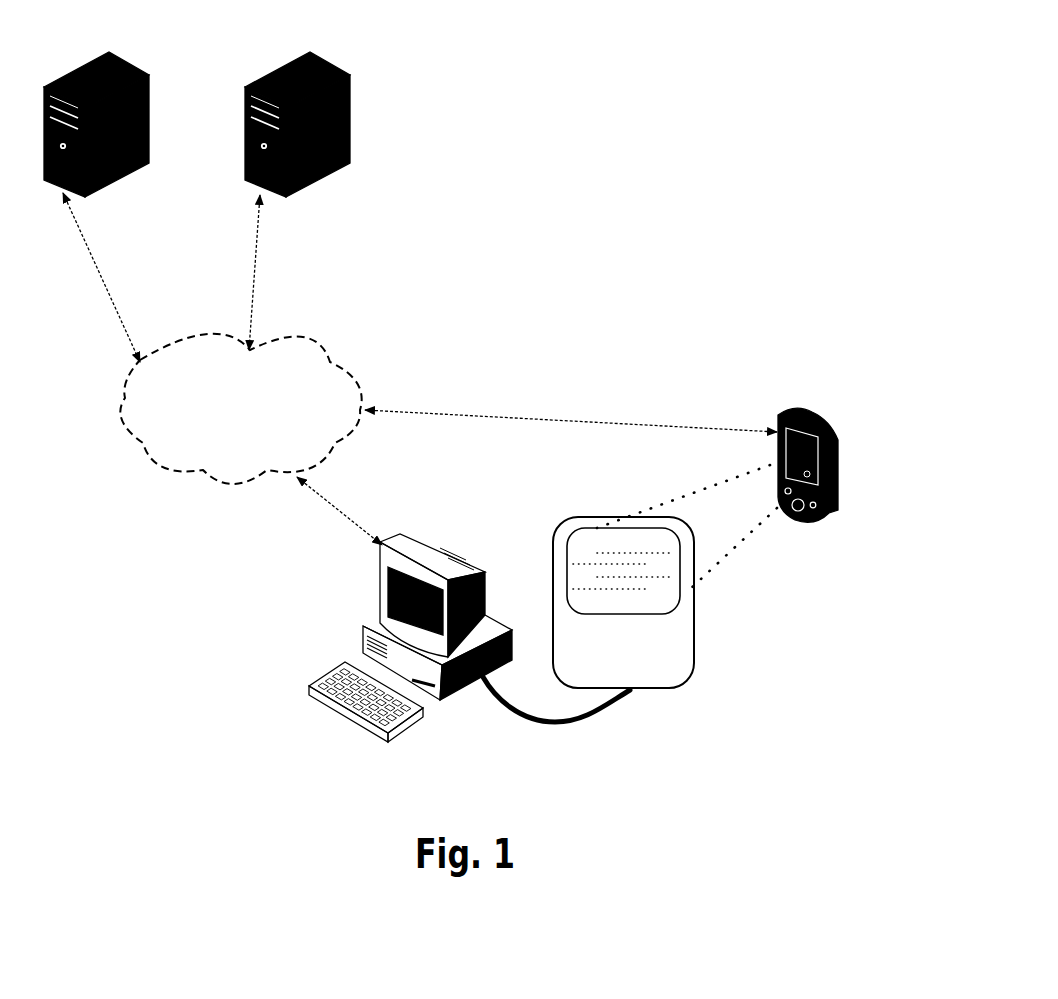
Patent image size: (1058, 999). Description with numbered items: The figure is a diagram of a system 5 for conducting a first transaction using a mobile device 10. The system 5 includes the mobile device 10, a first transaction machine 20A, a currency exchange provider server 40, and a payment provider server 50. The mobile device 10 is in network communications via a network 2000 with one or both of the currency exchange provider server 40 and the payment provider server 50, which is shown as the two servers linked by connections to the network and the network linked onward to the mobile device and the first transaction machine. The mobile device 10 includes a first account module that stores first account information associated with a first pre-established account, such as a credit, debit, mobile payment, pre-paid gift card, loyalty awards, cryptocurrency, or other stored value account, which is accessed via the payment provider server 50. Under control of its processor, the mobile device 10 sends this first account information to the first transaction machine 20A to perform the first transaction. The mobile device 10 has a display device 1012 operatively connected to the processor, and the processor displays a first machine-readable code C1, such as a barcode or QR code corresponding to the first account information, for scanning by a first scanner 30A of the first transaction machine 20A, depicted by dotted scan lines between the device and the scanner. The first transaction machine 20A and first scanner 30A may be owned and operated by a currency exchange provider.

The system 5 is at (629, 205).
The payment provider server 50 is at (133, 63).
The currency exchange provider server 40 is at (337, 63).
The network 2000 is at (240, 409).
The mobile device 10 is at (837, 442).
The first machine-readable code C1 is at (809, 467).
The display device 1012 is at (811, 477).
The first transaction machine 20A is at (437, 550).
The first scanner 30A is at (577, 525).